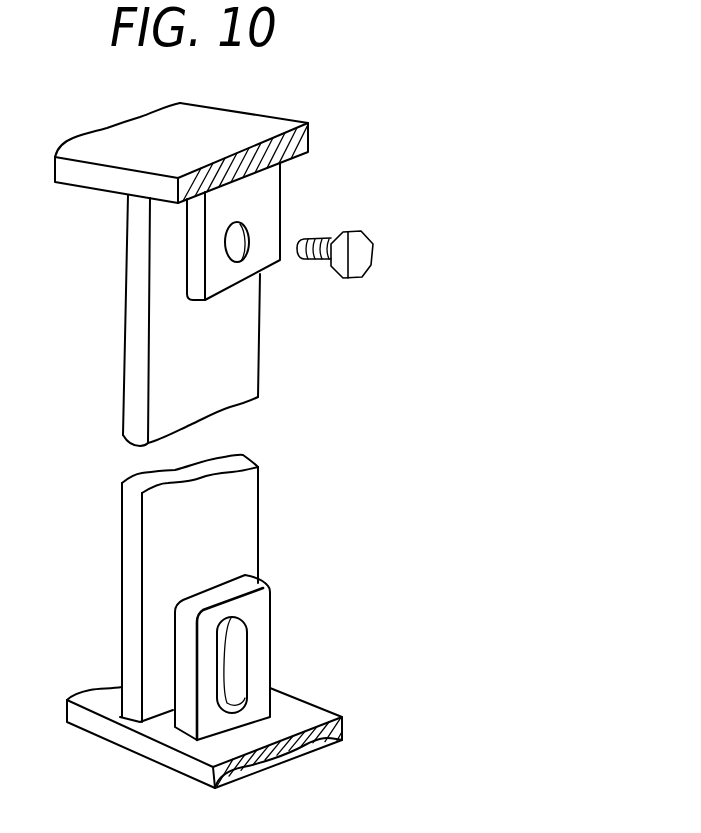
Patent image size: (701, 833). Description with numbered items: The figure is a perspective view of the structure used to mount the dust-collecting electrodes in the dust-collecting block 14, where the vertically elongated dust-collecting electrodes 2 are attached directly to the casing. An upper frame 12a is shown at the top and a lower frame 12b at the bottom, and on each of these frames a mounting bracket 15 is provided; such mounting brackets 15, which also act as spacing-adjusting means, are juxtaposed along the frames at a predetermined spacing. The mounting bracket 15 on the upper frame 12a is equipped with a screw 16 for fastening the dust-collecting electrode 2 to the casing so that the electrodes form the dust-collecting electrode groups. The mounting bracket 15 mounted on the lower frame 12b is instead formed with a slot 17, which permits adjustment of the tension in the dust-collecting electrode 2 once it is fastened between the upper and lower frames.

The dust-collecting electrode 2 is at (165, 392).
The upper frame 12a is at (257, 132).
The lower frame 12b is at (297, 717).
The dust-collecting block 14 is at (440, 345).
The mounting bracket 15 is at (258, 205).
The screw 16 is at (363, 264).
The slot 17 is at (242, 660).